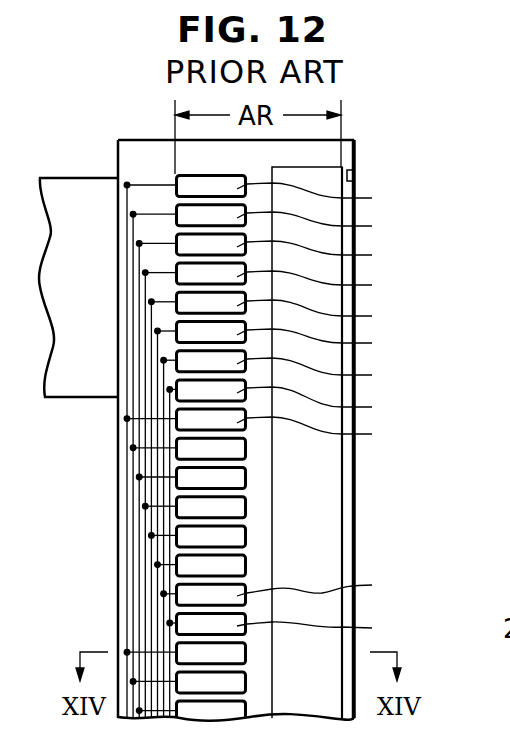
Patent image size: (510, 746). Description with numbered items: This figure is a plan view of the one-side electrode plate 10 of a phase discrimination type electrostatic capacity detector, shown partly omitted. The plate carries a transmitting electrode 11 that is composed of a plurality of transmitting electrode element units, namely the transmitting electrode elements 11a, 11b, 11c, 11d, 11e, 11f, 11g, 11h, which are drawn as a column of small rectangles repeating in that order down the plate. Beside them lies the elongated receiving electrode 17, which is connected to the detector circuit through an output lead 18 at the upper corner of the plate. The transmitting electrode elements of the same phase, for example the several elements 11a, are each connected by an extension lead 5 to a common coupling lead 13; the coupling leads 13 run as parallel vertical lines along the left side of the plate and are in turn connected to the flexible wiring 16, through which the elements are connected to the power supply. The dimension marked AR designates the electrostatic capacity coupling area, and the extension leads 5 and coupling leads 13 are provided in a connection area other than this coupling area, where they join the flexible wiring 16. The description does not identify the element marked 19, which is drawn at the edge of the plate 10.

The extension lead 5 is at (147, 419).
The one-side electrode plate 10 is at (92, 604).
The transmitting electrode 11 is at (443, 273).
The transmitting electrode element 11a is at (300, 409).
The transmitting electrode element 11b is at (300, 220).
The transmitting electrode element 11c is at (299, 249).
The transmitting electrode element 11d is at (300, 279).
The transmitting electrode element 11e is at (300, 309).
The transmitting electrode element 11f is at (297, 338).
The transmitting electrode element 11g is at (300, 368).
The transmitting electrode element 11h is at (300, 492).
The coupling lead 13 is at (133, 467).
The flexible wiring 16 is at (58, 350).
The receiving electrode 17 is at (322, 515).
The output lead 18 is at (356, 172).
The substrate edge 19 is at (120, 518).